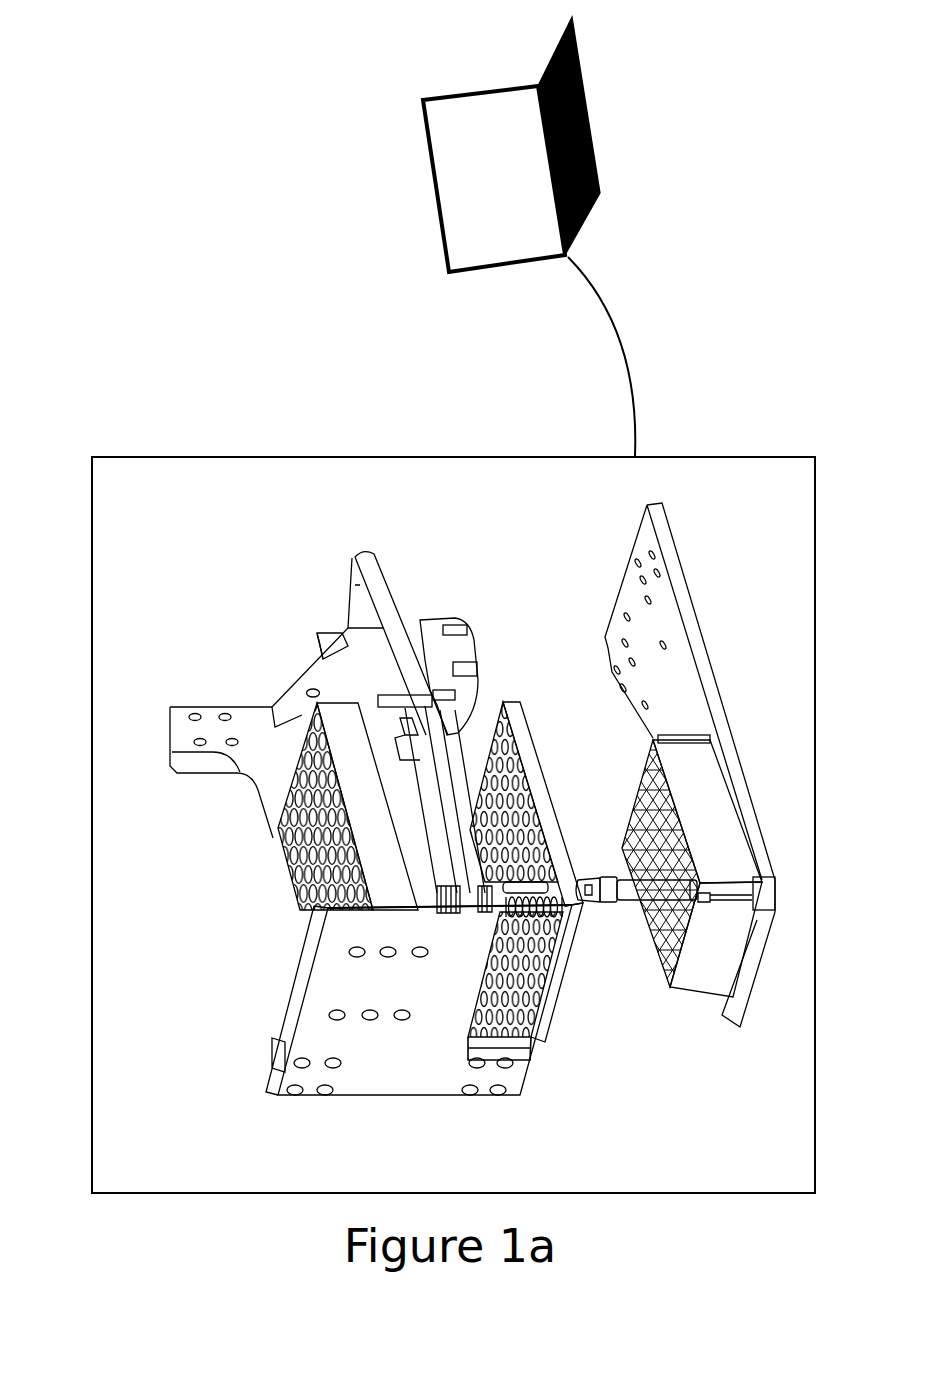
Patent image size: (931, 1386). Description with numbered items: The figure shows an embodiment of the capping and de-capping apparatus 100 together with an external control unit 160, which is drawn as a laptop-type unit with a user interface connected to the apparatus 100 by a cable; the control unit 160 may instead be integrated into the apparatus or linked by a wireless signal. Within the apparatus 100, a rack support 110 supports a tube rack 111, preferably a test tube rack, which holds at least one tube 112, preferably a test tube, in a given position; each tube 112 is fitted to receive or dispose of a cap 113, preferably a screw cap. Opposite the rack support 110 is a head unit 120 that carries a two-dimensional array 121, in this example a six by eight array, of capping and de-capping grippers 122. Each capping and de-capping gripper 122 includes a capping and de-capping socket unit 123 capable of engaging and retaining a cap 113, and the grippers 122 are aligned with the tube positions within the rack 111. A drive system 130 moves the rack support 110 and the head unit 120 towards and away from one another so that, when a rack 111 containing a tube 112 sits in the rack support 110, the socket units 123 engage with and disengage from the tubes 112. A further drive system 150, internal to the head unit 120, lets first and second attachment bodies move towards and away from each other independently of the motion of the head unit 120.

The capping and de-capping apparatus 100 is at (192, 900).
The rack support 110 is at (640, 622).
The tube rack 111 is at (710, 972).
The tube 112 is at (633, 905).
The cap 113 is at (606, 868).
The head unit 120 is at (435, 1062).
The two-dimensional array 121 is at (306, 918).
The capping and de-capping gripper 122 is at (533, 880).
The capping and de-capping socket unit 123 is at (585, 868).
The drive system 130 is at (340, 607).
The drive system 150 is at (478, 635).
The external control unit 160 is at (394, 200).